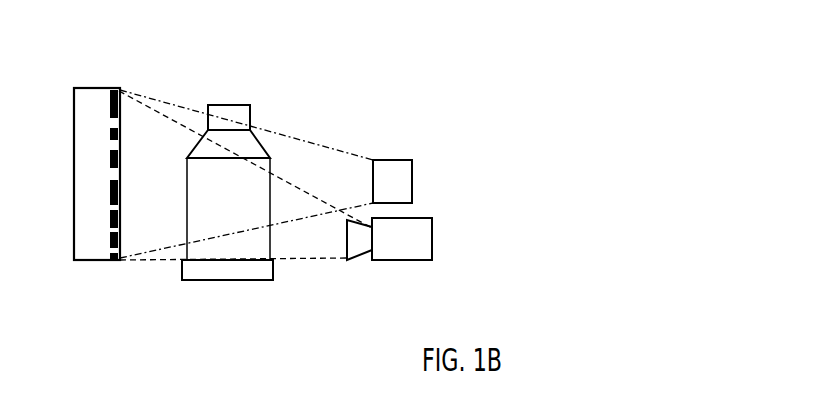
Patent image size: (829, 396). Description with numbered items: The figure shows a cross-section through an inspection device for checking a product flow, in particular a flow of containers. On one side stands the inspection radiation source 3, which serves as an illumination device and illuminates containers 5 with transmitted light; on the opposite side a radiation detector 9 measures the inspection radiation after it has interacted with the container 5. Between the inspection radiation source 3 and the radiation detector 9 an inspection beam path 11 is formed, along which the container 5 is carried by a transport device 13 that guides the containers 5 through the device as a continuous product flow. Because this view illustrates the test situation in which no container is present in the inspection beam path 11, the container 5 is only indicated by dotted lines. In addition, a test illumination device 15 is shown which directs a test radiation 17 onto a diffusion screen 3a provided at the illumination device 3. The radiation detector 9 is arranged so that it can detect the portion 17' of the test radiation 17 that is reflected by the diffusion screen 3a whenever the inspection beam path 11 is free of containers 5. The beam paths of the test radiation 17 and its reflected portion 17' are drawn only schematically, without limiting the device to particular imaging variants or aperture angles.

The inspection radiation source 3 is at (83, 91).
The diffusion screen 3a is at (113, 89).
The container 5 is at (240, 105).
The radiation detector 9 is at (420, 236).
The inspection beam path 11 is at (297, 106).
The transport device 13 is at (193, 281).
The test illumination device 15 is at (390, 159).
The test radiation 17 is at (311, 132).
The reflected portion of test radiation 17' is at (185, 85).